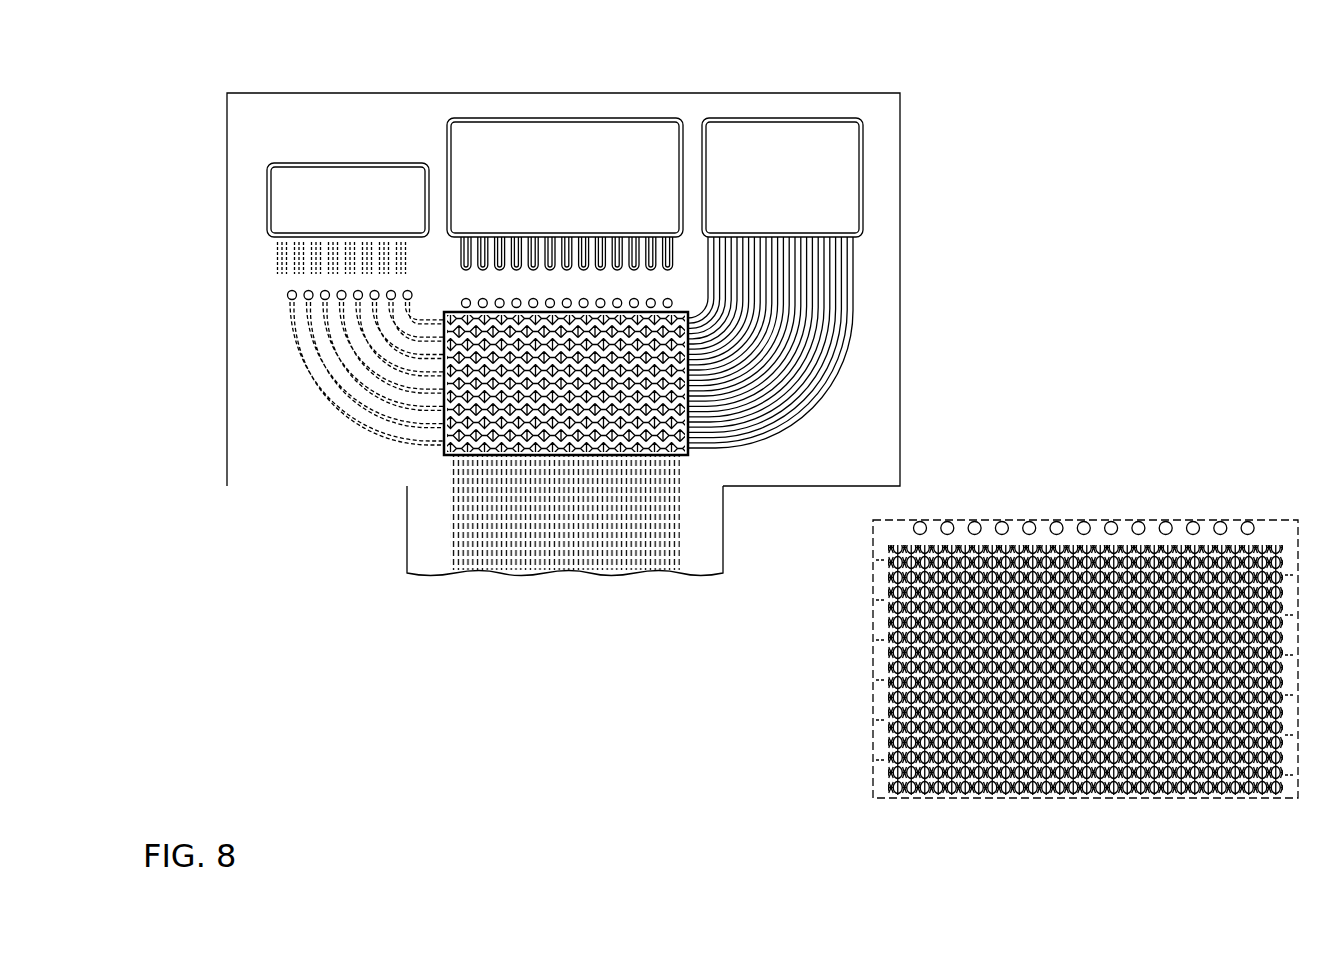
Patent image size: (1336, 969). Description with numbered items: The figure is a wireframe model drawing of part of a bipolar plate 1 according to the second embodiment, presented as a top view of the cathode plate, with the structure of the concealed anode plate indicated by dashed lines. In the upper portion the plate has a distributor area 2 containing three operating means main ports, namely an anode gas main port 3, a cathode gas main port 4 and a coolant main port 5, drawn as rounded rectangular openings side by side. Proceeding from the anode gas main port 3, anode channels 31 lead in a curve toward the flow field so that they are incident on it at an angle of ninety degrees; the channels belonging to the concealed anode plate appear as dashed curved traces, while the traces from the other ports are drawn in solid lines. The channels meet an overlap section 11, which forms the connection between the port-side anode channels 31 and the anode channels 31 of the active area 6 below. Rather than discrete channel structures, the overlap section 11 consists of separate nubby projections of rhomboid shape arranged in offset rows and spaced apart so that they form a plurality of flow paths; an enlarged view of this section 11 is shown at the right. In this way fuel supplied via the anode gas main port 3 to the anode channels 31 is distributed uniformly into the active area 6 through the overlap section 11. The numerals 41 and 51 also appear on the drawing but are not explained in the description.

The bipolar plate 1 is at (733, 449).
The distributor area 2 is at (604, 264).
The anode gas main port 3 is at (369, 182).
The cathode gas main port 4 is at (544, 140).
The coolant main port 5 is at (775, 245).
The active area 6 is at (449, 579).
The overlap section 11 is at (690, 458).
The anode channels 31 is at (590, 545).
The second conductive threads 41 is at (673, 562).
The textile fabric 51 is at (524, 545).